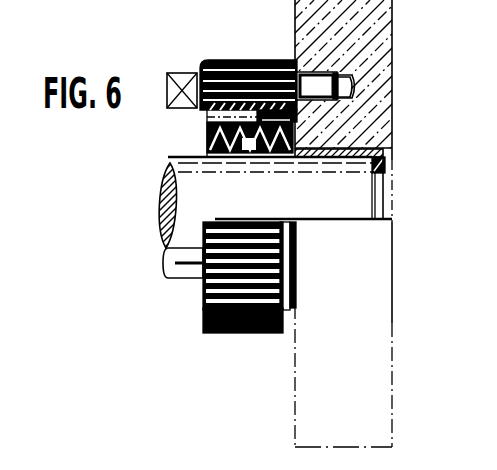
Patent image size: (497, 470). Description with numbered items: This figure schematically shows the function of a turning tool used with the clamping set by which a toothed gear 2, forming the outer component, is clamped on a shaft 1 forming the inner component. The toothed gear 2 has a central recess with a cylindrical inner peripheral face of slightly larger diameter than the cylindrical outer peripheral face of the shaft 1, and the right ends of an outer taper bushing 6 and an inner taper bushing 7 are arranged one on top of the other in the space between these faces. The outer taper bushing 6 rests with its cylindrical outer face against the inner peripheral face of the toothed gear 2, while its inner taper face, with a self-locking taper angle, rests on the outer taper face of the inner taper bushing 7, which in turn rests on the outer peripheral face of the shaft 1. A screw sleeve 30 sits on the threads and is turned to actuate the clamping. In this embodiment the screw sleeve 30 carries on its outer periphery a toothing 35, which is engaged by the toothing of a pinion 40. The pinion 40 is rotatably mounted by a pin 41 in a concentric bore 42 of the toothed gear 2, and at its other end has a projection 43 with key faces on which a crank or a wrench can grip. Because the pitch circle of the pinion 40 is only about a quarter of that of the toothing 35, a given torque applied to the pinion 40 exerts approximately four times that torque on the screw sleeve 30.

The shaft 1 is at (172, 243).
The toothed gear 2 is at (383, 35).
The outer taper bushing 6 is at (377, 150).
The inner taper bushing 7 is at (212, 153).
The screw sleeve 30 is at (216, 303).
The toothing 35 is at (238, 334).
The pinion 40 is at (238, 50).
The pin 41 is at (312, 78).
The concentric bore 42 is at (355, 80).
The projection 43 is at (177, 73).